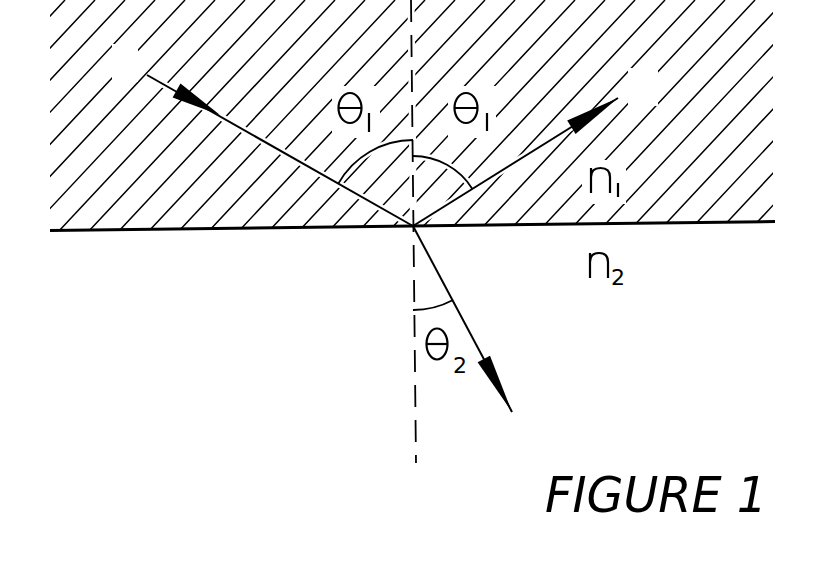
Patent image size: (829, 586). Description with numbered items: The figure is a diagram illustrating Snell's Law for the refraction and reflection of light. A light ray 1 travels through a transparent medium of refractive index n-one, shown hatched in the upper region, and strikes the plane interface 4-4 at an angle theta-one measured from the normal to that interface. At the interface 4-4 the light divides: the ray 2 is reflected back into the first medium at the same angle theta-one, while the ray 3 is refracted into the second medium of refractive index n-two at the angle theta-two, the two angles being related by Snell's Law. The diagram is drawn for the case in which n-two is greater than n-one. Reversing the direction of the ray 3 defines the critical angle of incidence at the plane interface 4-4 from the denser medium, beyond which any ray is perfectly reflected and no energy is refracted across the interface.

The light ray 1 is at (125, 75).
The reflected ray 2 is at (532, 151).
The refracted ray 3 is at (471, 336).
The plane interface 4 is at (414, 226).